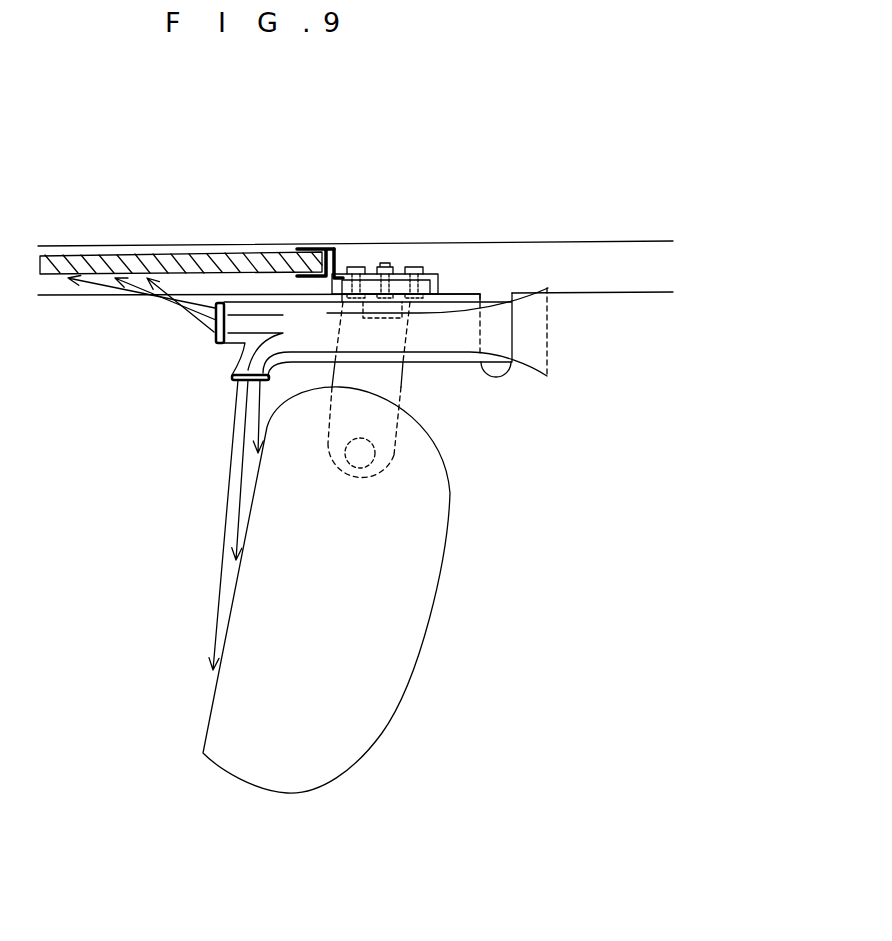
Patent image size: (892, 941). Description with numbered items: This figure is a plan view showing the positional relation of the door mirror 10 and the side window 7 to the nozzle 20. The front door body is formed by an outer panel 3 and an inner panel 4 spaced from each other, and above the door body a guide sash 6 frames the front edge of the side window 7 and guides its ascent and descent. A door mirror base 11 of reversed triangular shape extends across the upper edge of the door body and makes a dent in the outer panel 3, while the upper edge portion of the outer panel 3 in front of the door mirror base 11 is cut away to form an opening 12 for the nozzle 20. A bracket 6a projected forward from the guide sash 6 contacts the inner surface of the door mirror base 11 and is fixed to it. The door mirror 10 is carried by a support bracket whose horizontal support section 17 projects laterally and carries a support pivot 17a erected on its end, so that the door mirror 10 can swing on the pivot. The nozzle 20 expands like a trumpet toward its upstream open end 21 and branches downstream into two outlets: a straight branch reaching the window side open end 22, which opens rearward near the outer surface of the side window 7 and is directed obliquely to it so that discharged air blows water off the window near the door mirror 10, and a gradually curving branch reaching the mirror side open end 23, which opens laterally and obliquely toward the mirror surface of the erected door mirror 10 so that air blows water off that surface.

The outer panel 3 is at (633, 318).
The inner panel 4 is at (637, 227).
The guide sash 6 is at (315, 247).
The bracket 6a is at (337, 265).
The side window 7 is at (113, 252).
The door mirror 10 is at (380, 737).
The door mirror base 11 is at (430, 272).
The opening 12 is at (498, 370).
The horizontal support section 17 is at (440, 292).
The support pivot 17a is at (370, 463).
The nozzle 20 is at (433, 363).
The open end 21 is at (547, 340).
The window side open end 22 is at (217, 337).
The mirror side open end 23 is at (237, 382).